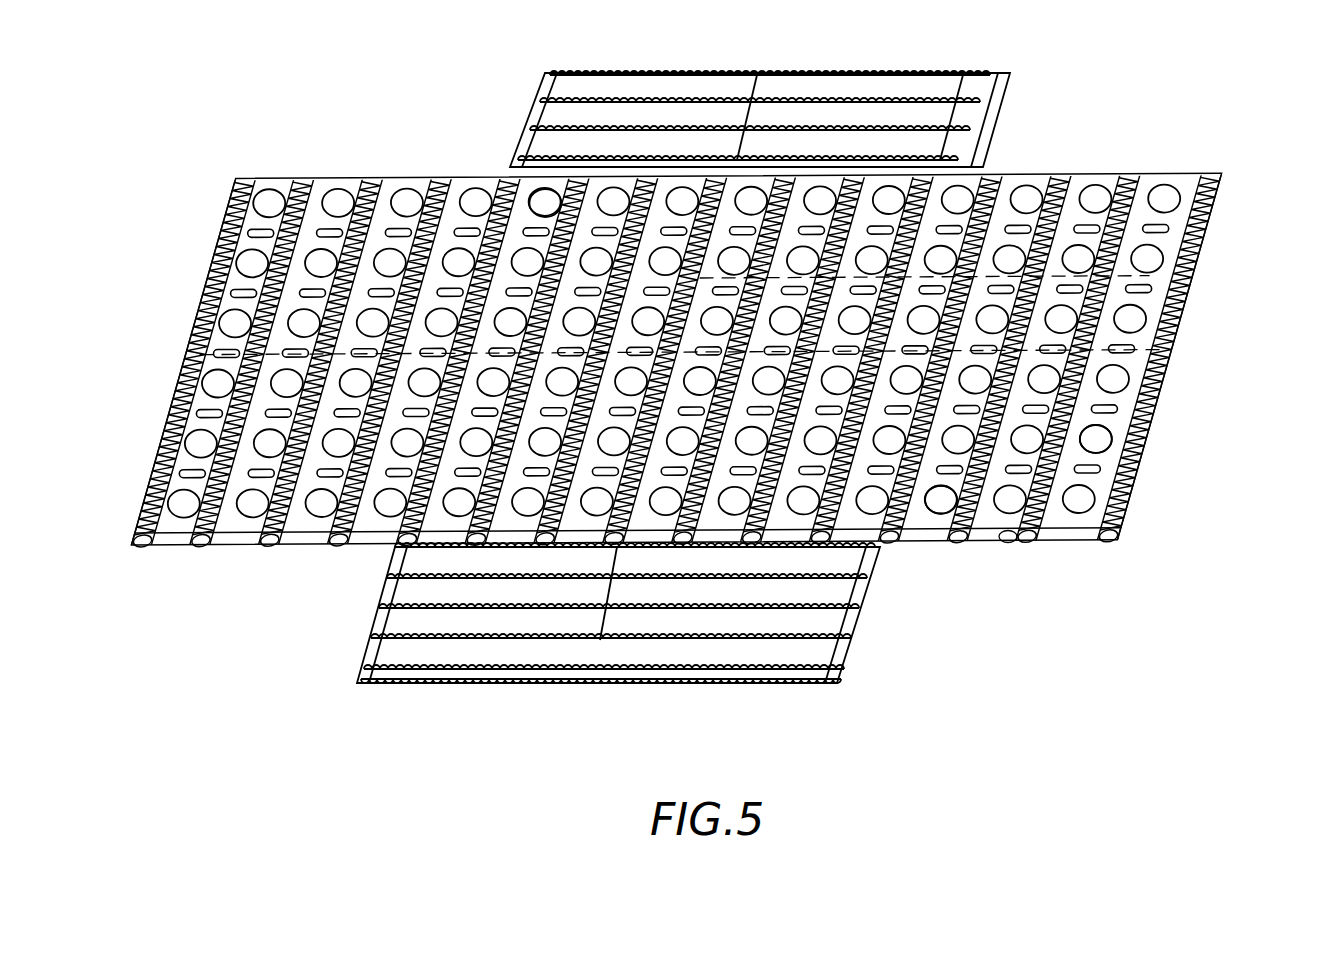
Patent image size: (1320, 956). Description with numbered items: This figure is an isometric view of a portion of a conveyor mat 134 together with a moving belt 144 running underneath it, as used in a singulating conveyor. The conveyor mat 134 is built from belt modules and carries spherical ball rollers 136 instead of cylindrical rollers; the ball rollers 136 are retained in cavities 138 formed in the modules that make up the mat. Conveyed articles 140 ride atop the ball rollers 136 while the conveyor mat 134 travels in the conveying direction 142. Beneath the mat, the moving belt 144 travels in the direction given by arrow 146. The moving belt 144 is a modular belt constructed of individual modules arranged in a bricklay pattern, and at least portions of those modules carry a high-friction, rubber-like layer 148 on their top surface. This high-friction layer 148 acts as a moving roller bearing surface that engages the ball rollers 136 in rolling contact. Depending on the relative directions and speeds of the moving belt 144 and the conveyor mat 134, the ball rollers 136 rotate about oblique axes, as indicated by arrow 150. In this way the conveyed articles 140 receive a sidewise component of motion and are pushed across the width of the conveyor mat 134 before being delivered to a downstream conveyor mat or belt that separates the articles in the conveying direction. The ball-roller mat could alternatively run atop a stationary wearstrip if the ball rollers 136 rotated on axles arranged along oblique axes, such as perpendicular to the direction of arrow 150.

The conveyor mat 134 is at (1020, 540).
The spherical ball rollers 136 is at (1097, 439).
The cavities 138 is at (935, 510).
The articles 140 is at (1180, 190).
The conveying direction 142 is at (1178, 145).
The moving belt 144 is at (828, 622).
The arrow 146 is at (615, 695).
The high-friction, rubber-like layer 148 is at (940, 80).
The arrow 150 is at (546, 198).